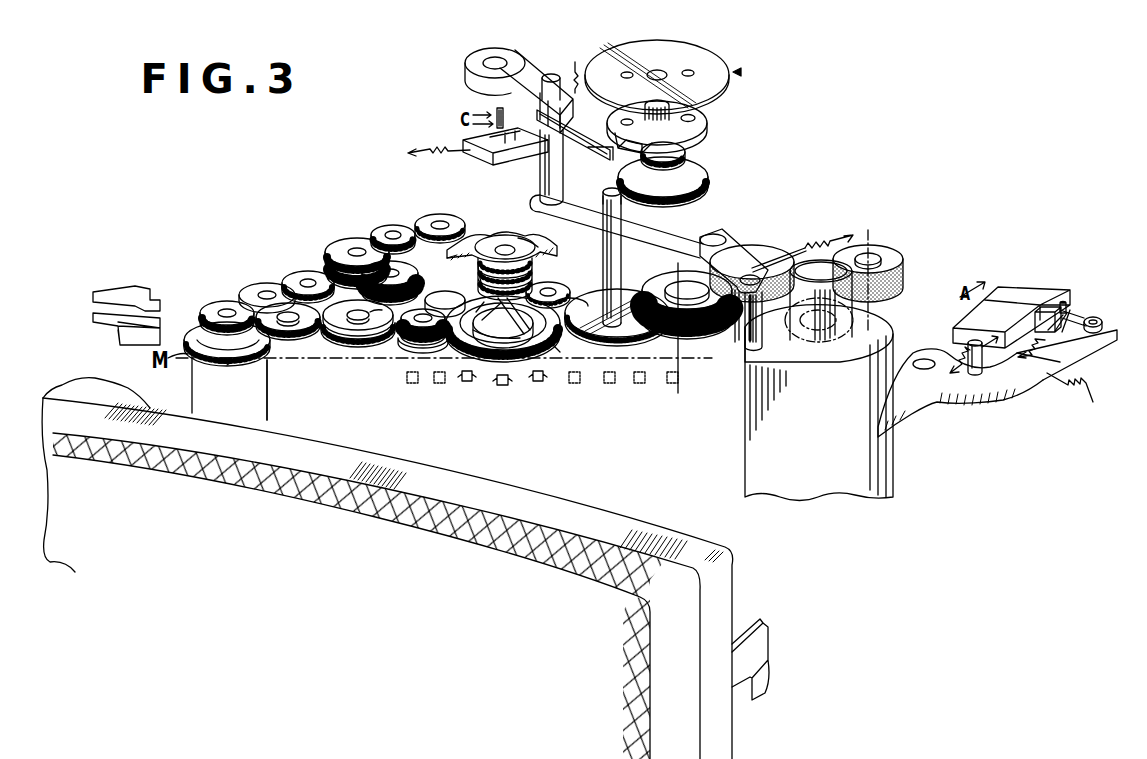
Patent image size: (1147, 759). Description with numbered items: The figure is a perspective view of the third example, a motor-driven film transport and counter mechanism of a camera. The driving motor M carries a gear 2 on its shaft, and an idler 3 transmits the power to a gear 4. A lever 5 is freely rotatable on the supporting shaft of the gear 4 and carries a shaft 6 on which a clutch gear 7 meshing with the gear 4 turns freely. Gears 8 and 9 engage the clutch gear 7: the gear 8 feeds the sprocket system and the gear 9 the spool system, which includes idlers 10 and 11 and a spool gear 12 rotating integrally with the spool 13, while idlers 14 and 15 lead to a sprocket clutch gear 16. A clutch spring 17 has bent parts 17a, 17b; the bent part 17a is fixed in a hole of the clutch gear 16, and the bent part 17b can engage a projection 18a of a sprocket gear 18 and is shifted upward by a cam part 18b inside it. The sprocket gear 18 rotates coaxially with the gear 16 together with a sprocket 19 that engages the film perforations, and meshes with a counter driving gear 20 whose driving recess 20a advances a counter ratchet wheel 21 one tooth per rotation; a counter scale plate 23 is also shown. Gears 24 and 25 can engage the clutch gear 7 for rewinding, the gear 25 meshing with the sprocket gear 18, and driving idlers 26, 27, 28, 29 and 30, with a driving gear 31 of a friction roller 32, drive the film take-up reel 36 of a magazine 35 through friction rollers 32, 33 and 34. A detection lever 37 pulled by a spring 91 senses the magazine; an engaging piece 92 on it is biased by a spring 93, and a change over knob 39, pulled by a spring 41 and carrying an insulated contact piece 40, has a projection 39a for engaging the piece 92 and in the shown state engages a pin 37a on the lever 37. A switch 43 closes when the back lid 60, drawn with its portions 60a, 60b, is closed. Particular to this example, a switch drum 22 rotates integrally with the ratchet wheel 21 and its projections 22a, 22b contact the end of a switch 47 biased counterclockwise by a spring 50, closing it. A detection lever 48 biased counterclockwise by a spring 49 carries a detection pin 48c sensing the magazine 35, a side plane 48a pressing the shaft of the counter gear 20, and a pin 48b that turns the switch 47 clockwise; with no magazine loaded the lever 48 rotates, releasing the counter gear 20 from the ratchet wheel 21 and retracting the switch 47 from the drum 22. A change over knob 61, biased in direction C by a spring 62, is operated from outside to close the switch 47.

The gear 2 is at (215, 308).
The idler 3 is at (288, 348).
The gear 4 is at (358, 347).
The lever 5 is at (358, 365).
The shaft 6 is at (376, 352).
The clutch gear 7 is at (397, 281).
The gear 8 is at (357, 229).
The gear 9 is at (353, 243).
The idler 10 is at (306, 264).
The idler 11 is at (264, 276).
The spool gear 12 is at (227, 365).
The spool 13 is at (283, 392).
The idler 14 is at (393, 217).
The idler 15 is at (440, 210).
The sprocket clutch gear 16 is at (502, 217).
The clutch spring 17 is at (505, 246).
The bent part 17a is at (521, 209).
The bent part 17b is at (475, 240).
The sprocket gear 18 is at (503, 363).
The projection 18a is at (485, 399).
The cam part 18b is at (530, 400).
The sprocket 19 is at (559, 380).
The counter driving gear 20 is at (617, 354).
The driving recess 20a is at (598, 184).
The counter ratchet wheel 21 is at (678, 182).
The switch drum 22 is at (674, 126).
The projection 22a is at (613, 131).
The projection 22b is at (696, 153).
The counter scale plate 23 is at (676, 76).
The gear 24 is at (414, 365).
The gear 25 is at (423, 367).
The driving idler 26 is at (445, 292).
The driving idler 27 is at (569, 284).
The driving idler 28 is at (559, 306).
The driving idler 29 is at (630, 261).
The driving idler 30 is at (687, 334).
The driving gear 31 is at (726, 326).
The friction roller 32 is at (752, 251).
The friction roller 33 is at (819, 339).
The friction roller 34 is at (870, 272).
The magazine 35 is at (819, 428).
The film take up reel 36 is at (782, 239).
The detection lever 37 is at (960, 407).
The pin 37a is at (977, 395).
The change over knob 39 is at (1011, 294).
The projection 39a is at (1046, 290).
The contact piece 40 is at (1067, 393).
The spring 41 is at (941, 342).
The switch 43 is at (126, 300).
The switch 47 is at (518, 104).
The detection lever 48 is at (649, 244).
The side plane 48a is at (571, 208).
The pin 48b is at (545, 69).
The detection pin 48c is at (734, 361).
The spring 49 is at (829, 212).
The spring 50 is at (576, 65).
The back lid 60 is at (387, 578).
The frame edge 60a is at (96, 375).
The frame tab 60b is at (780, 659).
The change over knob 61 is at (487, 143).
The spring 62 is at (427, 141).
The spring 91 is at (1070, 410).
The engaging piece 92 is at (1085, 302).
The spring 93 is at (1066, 297).